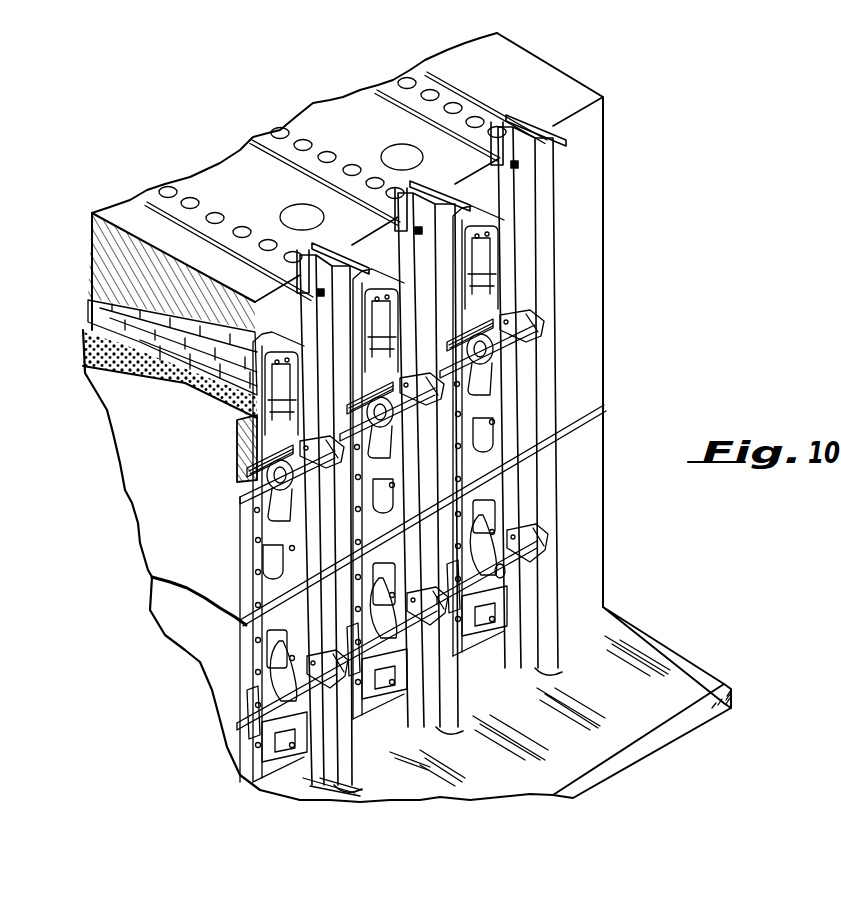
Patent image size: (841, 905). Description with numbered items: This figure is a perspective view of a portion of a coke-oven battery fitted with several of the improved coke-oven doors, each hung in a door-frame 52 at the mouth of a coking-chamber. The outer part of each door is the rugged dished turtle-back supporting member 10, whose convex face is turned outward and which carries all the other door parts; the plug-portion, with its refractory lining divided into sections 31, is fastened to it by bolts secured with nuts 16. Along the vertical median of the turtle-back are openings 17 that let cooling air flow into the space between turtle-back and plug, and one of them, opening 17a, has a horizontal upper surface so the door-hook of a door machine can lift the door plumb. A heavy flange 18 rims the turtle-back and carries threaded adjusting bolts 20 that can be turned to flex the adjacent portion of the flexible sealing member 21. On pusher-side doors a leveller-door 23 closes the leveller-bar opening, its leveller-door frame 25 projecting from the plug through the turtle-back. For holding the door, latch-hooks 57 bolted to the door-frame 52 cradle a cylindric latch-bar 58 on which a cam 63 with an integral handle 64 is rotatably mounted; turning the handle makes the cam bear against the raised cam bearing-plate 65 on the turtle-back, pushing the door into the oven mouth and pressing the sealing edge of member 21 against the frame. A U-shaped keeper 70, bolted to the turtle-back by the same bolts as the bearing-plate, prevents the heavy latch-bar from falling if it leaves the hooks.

The turtle-back supporting member 10 is at (290, 628).
The nuts 16 is at (363, 517).
The openings 17 is at (483, 617).
The door-hook opening 17a is at (488, 430).
The heavy flange 18 is at (490, 240).
The adjusting bolt 20 is at (243, 563).
The flexible sealing member 21 is at (487, 230).
The leveller-door 23 is at (483, 262).
The leveller-door frame 25 is at (237, 423).
The refractory lining sections 31 is at (243, 452).
The door-frame 52 is at (510, 278).
The latch-hooks 57 is at (543, 323).
The latch-bar 58 is at (248, 492).
The cam 63 is at (503, 573).
The handle 64 is at (492, 372).
The cam bearing-plate 65 is at (273, 480).
The keeper 70 is at (247, 690).